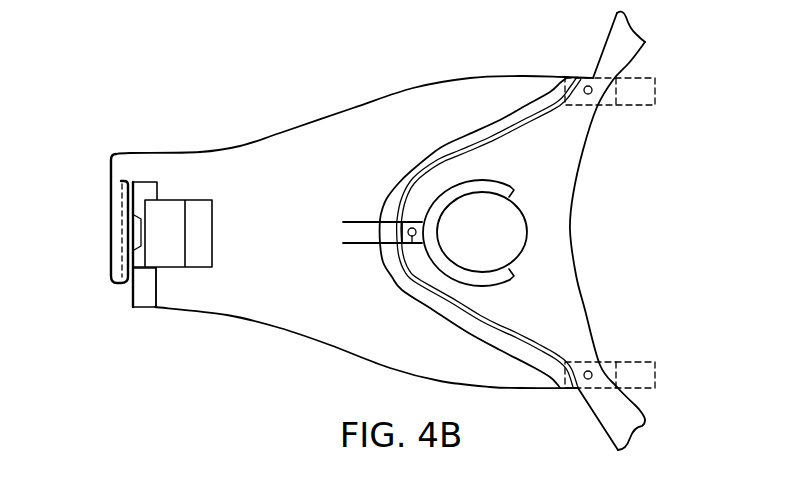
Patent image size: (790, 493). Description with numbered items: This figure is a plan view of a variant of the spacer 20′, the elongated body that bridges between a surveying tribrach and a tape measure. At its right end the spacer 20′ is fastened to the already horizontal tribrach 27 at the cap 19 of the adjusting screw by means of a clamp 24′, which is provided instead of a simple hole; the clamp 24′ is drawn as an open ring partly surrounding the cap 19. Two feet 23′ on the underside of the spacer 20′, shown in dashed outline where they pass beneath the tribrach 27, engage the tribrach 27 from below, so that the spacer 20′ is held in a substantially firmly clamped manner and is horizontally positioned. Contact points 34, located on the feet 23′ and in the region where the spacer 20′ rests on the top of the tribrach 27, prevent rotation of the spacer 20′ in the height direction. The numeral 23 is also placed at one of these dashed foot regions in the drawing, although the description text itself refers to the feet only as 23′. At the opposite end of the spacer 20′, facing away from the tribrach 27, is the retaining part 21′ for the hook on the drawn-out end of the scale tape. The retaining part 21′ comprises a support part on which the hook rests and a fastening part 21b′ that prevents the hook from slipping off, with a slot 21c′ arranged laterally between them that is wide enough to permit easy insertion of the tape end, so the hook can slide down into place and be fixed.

The spacer 20′ is at (271, 223).
The retaining part 21′ is at (138, 133).
The fastening part 21b′ is at (118, 197).
The slot 21c′ is at (126, 294).
The tribrach 27 is at (617, 33).
The mounting portion 23 is at (637, 108).
The feet 23′ is at (638, 360).
The clamp 24′ is at (500, 184).
The cap 19 is at (514, 213).
The contact points 34 is at (590, 74).